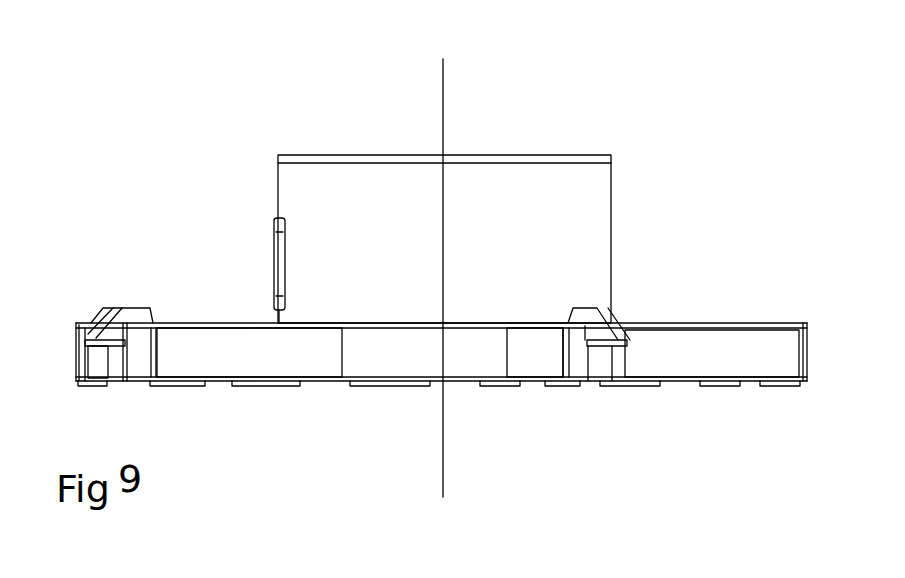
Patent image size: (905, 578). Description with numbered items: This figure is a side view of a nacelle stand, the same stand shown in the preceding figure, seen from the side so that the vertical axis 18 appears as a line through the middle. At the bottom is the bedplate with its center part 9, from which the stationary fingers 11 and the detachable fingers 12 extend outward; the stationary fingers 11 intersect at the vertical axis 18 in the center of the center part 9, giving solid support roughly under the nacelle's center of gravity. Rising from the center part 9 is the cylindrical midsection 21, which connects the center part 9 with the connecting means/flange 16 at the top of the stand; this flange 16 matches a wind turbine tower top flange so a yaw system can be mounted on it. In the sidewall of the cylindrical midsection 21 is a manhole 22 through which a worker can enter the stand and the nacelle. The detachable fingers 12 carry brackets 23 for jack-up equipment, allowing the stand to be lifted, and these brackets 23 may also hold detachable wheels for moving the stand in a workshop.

The center part 9 is at (388, 375).
The stationary fingers 11 is at (690, 340).
The detachable fingers 12 is at (235, 360).
The connecting means/flange 16 is at (579, 155).
The vertical axis 18 is at (443, 80).
The cylindrical midsection 21 is at (356, 273).
The manhole 22 is at (275, 268).
The brackets 23 is at (115, 346).